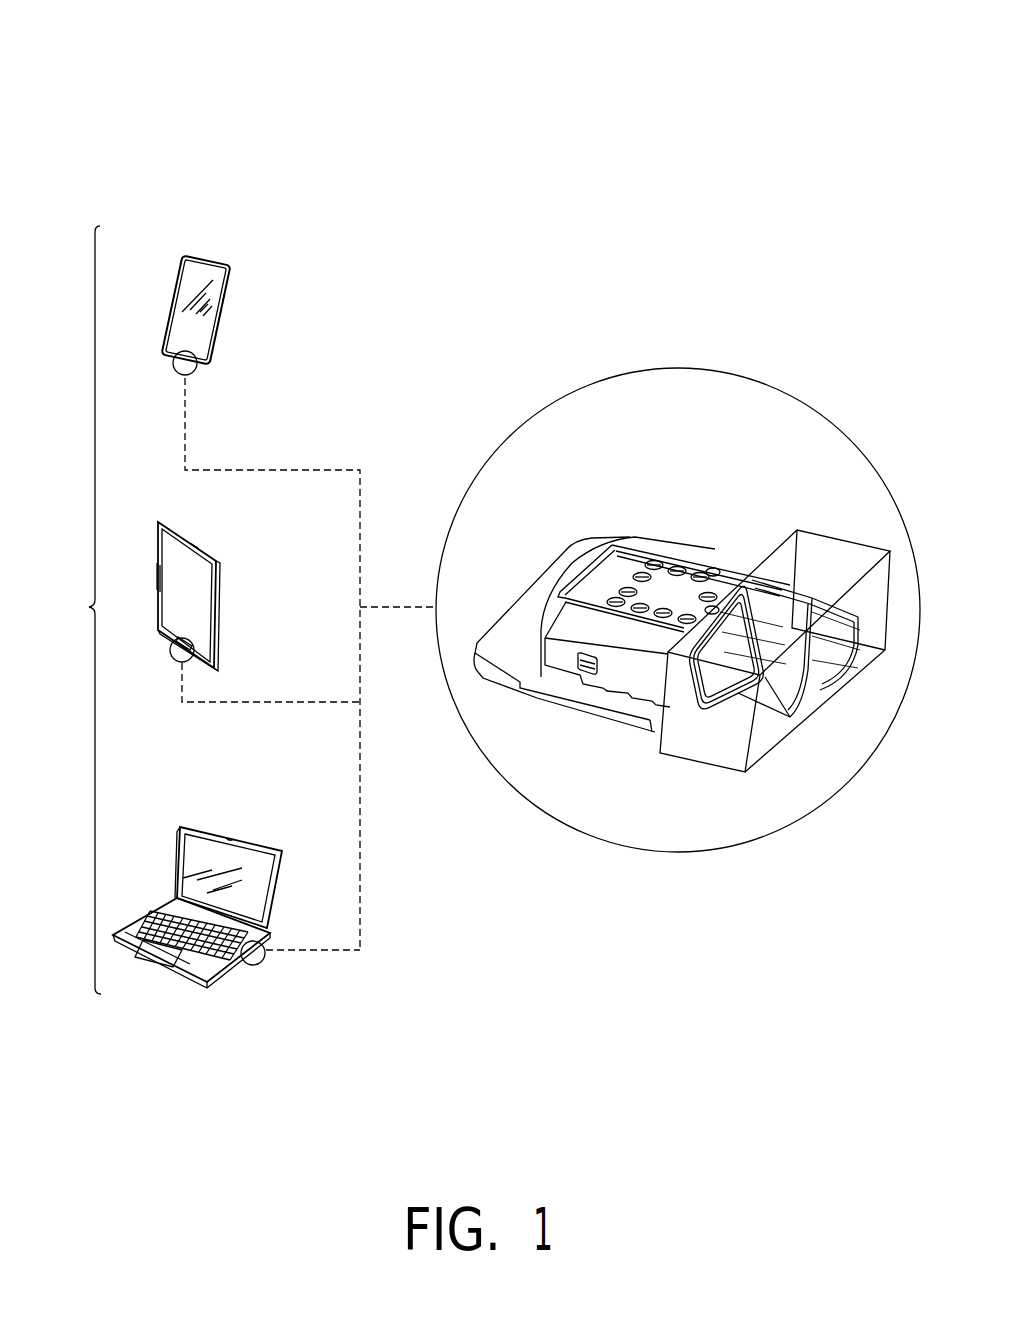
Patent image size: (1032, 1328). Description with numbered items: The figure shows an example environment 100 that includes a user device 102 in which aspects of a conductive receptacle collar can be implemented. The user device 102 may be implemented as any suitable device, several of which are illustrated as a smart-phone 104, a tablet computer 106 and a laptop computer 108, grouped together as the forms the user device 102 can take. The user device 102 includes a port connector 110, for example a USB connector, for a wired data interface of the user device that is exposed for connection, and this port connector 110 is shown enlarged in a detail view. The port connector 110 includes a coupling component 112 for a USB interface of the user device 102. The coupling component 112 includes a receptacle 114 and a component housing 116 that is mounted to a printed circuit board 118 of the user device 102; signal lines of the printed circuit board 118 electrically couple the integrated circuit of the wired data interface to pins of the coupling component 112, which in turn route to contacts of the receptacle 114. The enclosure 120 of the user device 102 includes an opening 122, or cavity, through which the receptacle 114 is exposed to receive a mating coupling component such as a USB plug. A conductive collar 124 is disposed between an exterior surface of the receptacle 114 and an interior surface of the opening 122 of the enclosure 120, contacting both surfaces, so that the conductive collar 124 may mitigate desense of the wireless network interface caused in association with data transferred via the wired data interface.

The environment 100 is at (142, 50).
The user device 102 is at (86, 607).
The smart-phone 104 is at (229, 272).
The tablet computer 106 is at (207, 552).
The laptop computer 108 is at (243, 837).
The port connector 110 is at (550, 392).
The coupling component 112 is at (602, 513).
The receptacle 114 is at (741, 715).
The component housing 116 is at (574, 577).
The printed circuit board 118 is at (614, 727).
The enclosure 120 is at (709, 770).
The opening 122 is at (824, 690).
The conductive collar 124 is at (783, 578).